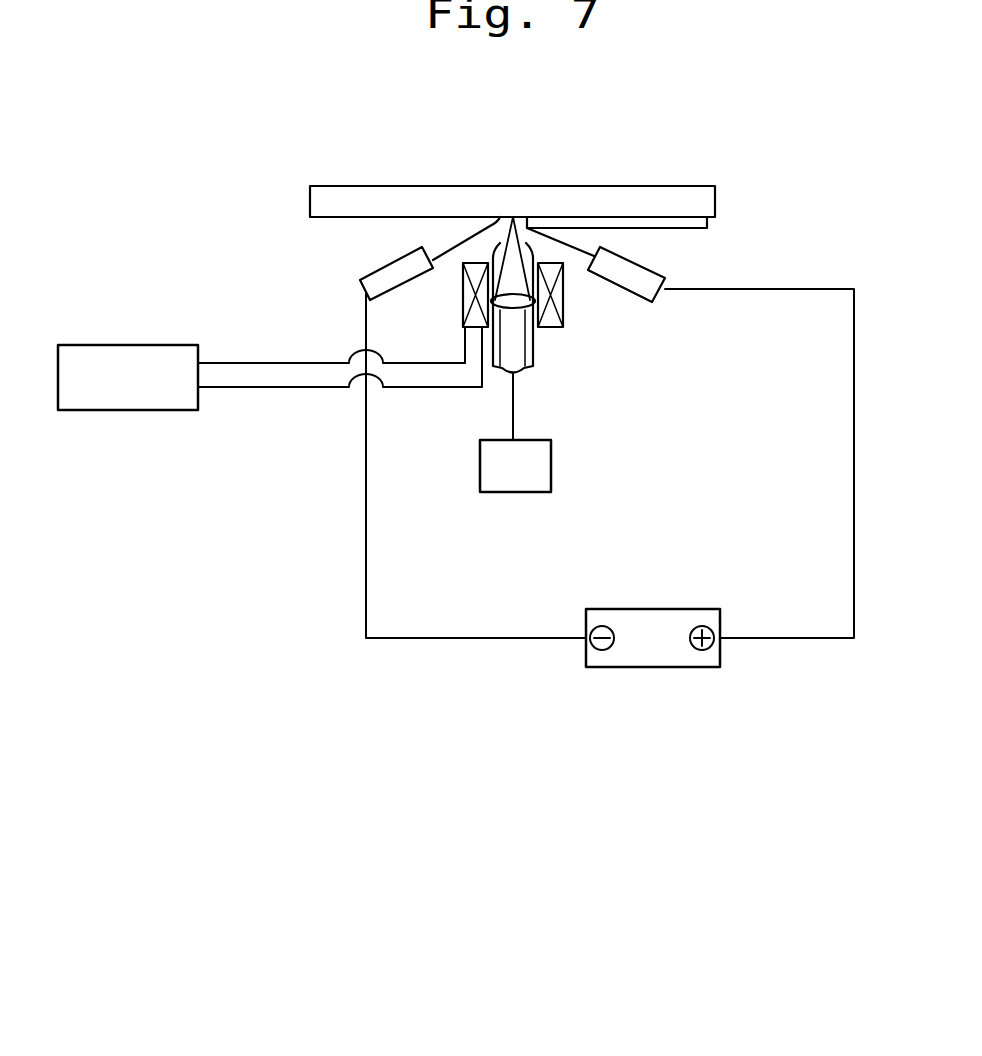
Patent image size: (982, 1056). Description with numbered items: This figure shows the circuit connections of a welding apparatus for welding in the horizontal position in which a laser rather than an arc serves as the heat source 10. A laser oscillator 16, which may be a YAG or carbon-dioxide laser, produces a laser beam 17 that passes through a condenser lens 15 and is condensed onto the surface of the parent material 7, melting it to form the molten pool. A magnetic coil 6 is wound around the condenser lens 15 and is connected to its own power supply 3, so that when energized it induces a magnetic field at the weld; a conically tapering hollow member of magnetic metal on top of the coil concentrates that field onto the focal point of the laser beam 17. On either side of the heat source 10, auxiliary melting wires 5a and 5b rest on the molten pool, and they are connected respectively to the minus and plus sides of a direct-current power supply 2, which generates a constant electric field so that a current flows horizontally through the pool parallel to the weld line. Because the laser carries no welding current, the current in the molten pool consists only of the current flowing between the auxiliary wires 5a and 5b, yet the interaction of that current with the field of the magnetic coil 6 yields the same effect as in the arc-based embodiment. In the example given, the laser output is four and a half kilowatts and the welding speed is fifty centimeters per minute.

The power supply 2 is at (639, 658).
The power supply 3 is at (117, 398).
The auxiliary wire 5a is at (437, 252).
The auxiliary wire 5b is at (570, 247).
The magnetic coil 6 is at (463, 298).
The parent material 7 is at (317, 203).
The heat source 10 is at (513, 218).
The condenser lens 15 is at (522, 300).
The laser oscillator 16 is at (543, 468).
The laser beam 17 is at (528, 350).